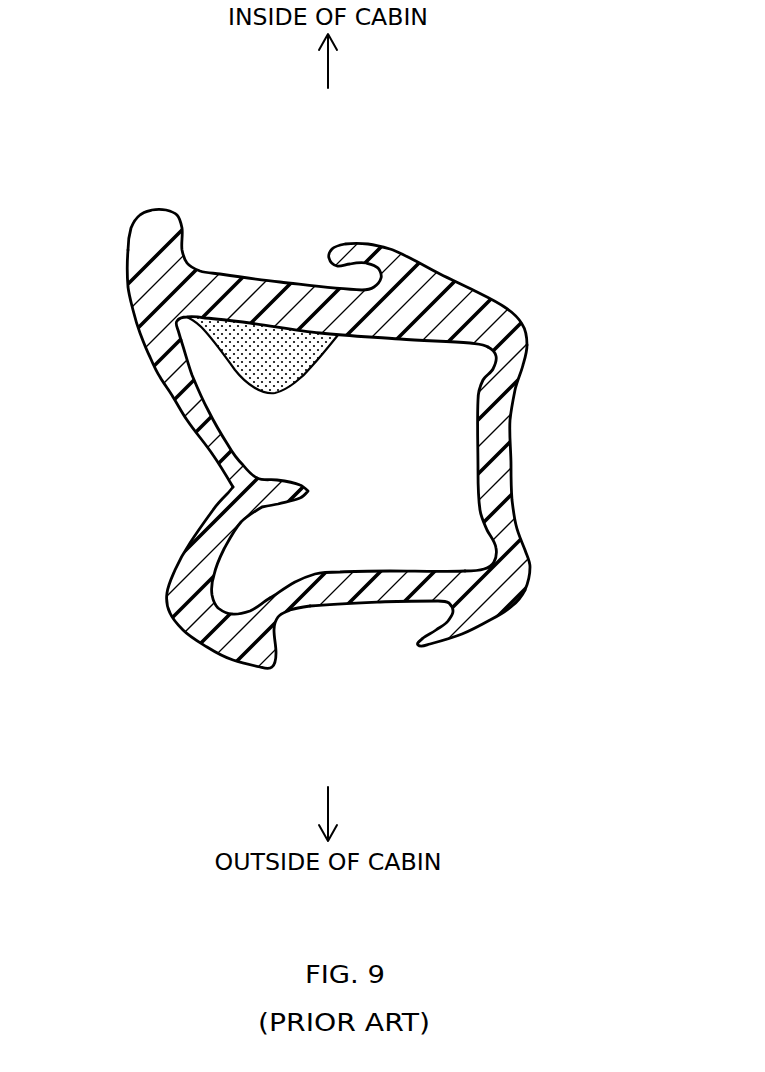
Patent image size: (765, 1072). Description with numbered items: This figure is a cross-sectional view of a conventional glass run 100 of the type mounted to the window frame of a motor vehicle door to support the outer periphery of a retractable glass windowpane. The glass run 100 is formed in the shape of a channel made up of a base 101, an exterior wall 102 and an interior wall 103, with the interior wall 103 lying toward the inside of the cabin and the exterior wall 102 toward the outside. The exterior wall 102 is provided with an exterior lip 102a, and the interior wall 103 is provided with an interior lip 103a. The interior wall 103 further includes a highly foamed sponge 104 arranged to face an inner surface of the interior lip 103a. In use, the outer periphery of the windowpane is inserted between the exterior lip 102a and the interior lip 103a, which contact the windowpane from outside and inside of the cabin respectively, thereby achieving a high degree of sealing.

The glass run 100 is at (110, 226).
The base 101 is at (513, 458).
The exterior wall 102 is at (357, 606).
The exterior lip 102a is at (204, 521).
The interior wall 103 is at (270, 297).
The interior lip 103a is at (157, 383).
The highly foamed sponge 104 is at (314, 369).